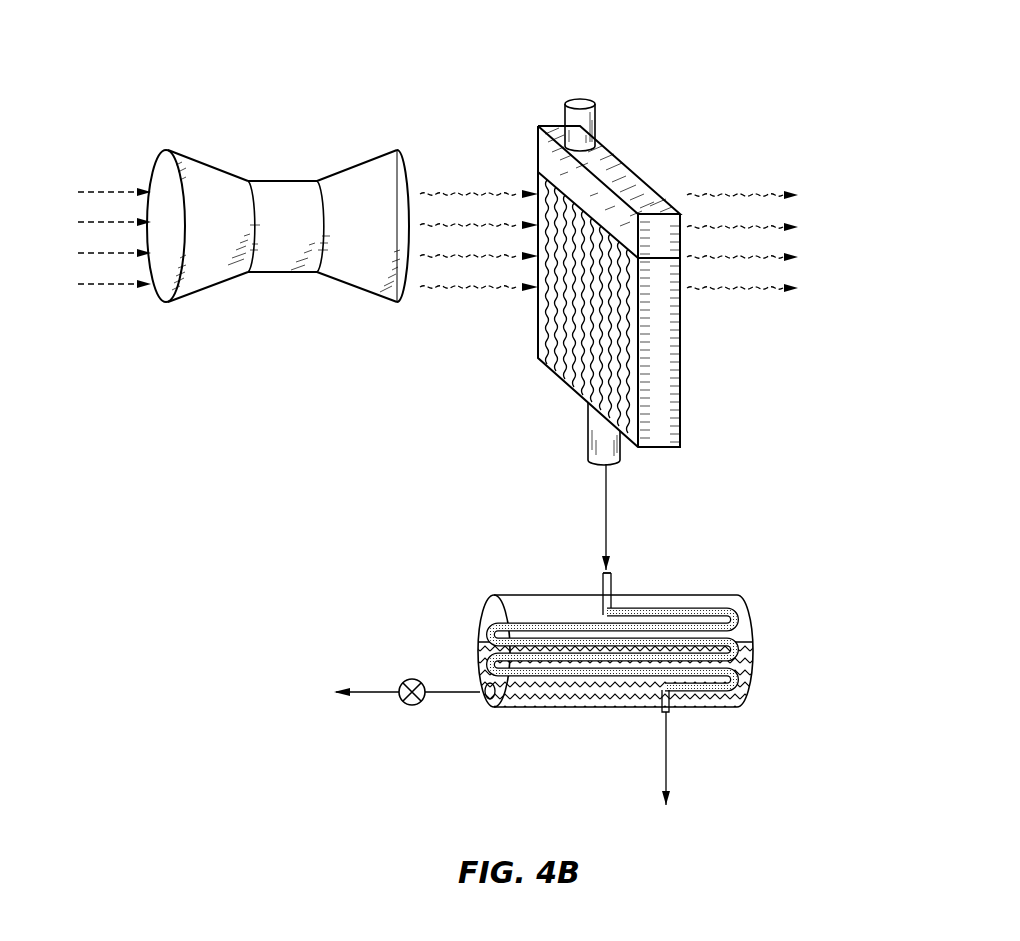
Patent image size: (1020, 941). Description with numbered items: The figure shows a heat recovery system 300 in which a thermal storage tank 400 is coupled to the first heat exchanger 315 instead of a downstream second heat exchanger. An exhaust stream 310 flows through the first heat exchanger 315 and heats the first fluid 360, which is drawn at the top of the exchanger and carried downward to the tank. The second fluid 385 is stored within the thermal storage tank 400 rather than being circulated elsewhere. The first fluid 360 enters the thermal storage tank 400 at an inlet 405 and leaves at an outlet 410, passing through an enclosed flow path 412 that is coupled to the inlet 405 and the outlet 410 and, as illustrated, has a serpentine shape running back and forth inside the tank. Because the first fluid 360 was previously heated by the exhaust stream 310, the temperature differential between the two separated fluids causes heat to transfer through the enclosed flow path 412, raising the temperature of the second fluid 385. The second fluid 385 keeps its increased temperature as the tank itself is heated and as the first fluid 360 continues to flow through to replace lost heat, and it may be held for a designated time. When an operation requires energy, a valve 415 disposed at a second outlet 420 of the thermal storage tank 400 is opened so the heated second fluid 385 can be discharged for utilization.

The heat recovery system 300 is at (373, 452).
The exhaust stream 310 is at (480, 193).
The first heat exchanger 315 is at (683, 297).
The first fluid 360 is at (578, 98).
The second fluid 385 is at (572, 703).
The thermal storage tank 400 is at (601, 674).
The inlet 405 is at (604, 600).
The outlet 410 is at (670, 711).
The enclosed flow path 412 is at (684, 607).
The valve 415 is at (411, 678).
The second outlet 420 is at (485, 697).